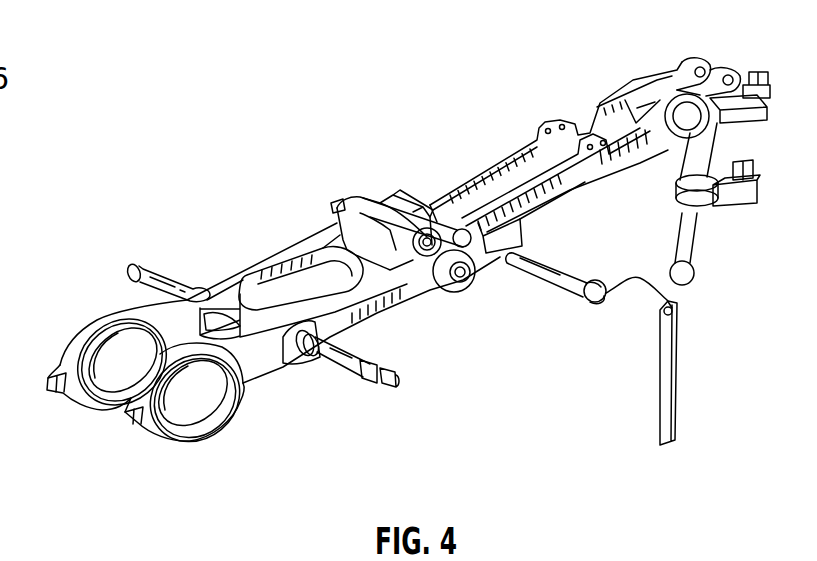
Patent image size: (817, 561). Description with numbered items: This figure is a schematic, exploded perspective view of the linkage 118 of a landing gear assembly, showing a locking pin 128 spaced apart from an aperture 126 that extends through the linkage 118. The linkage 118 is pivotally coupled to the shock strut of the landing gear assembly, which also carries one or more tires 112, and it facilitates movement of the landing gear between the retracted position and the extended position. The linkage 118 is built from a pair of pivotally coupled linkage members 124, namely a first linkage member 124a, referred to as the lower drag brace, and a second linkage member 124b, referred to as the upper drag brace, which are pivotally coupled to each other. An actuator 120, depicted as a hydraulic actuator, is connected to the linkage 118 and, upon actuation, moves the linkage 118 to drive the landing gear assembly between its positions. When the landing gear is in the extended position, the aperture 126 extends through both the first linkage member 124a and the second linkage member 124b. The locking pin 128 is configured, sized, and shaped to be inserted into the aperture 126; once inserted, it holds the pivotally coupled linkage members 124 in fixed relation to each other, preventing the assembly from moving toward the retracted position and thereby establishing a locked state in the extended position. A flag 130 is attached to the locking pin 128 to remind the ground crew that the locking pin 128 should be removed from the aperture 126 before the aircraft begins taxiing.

The tires 112 is at (0, 258).
The linkage 118 is at (357, 190).
The actuator 120 is at (727, 137).
The pivotally coupled linkage members 124 is at (393, 260).
The first linkage member 124a is at (237, 407).
The second linkage member 124b is at (563, 203).
The aperture 126 is at (467, 227).
The locking pin 128 is at (557, 287).
The flag 130 is at (680, 410).